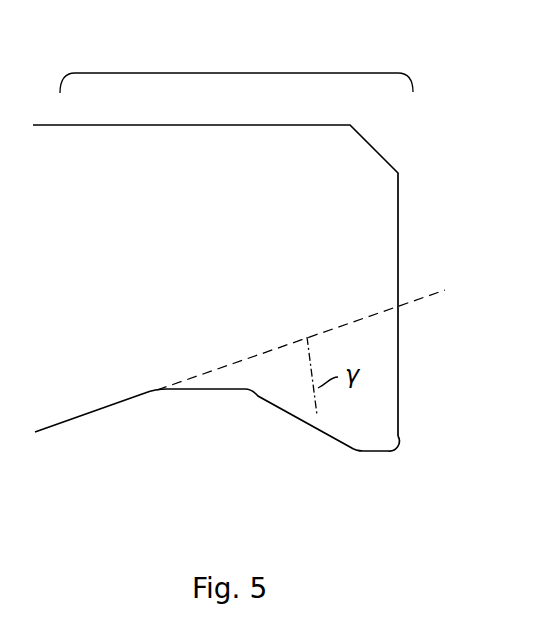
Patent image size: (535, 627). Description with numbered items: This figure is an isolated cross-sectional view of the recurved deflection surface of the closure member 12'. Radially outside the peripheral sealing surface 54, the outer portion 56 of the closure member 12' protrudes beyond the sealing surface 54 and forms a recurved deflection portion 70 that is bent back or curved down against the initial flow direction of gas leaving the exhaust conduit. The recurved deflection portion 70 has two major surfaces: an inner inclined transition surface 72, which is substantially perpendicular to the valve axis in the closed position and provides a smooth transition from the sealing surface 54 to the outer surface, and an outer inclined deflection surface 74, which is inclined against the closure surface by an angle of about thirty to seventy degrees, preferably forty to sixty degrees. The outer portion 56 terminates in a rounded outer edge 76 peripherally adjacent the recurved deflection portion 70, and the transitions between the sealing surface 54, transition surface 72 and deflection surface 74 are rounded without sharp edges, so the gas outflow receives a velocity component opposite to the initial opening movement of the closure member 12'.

The closure member 12' is at (235, 314).
The outer portion 56 is at (202, 73).
The sealing surface 54 is at (52, 435).
The recurved deflection portion 70 is at (266, 424).
The transition surface 72 is at (220, 378).
The deflection surface 74 is at (344, 424).
The rounded outer edge 76 is at (398, 453).